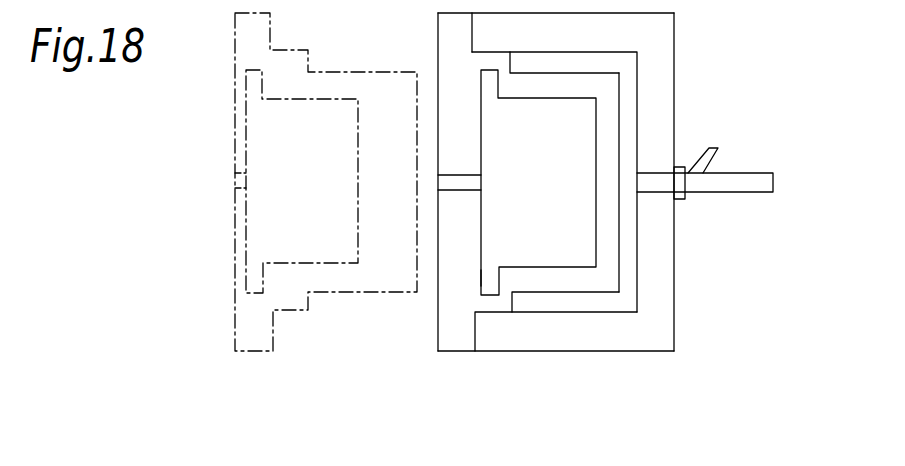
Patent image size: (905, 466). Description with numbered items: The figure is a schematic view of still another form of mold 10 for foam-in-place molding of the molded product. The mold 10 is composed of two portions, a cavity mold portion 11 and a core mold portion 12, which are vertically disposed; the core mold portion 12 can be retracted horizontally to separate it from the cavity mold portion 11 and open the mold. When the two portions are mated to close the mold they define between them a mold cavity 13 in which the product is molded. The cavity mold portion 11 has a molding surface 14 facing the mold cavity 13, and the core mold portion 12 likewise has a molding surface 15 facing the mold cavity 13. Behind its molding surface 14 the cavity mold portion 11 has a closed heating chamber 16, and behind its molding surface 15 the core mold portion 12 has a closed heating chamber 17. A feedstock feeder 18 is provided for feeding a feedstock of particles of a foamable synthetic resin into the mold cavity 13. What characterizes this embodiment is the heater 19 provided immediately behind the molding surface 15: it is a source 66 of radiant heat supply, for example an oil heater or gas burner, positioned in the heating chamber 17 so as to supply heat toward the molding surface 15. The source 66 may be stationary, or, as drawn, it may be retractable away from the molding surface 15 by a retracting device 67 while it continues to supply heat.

The mold 10 is at (437, 45).
The cavity mold portion 11 is at (677, 300).
The core mold portion 12 is at (235, 310).
The mold cavity 13 is at (628, 230).
The molding surface 14 is at (636, 155).
The molding surface 15 is at (413, 119).
The heating chamber 16 is at (655, 333).
The heating chamber 17 is at (452, 340).
The feedstock feeder 18 is at (747, 185).
The means for heating the molding surface 19 is at (481, 278).
The source of radiant heat supply 66 is at (333, 207).
The retracting device 67 is at (240, 181).